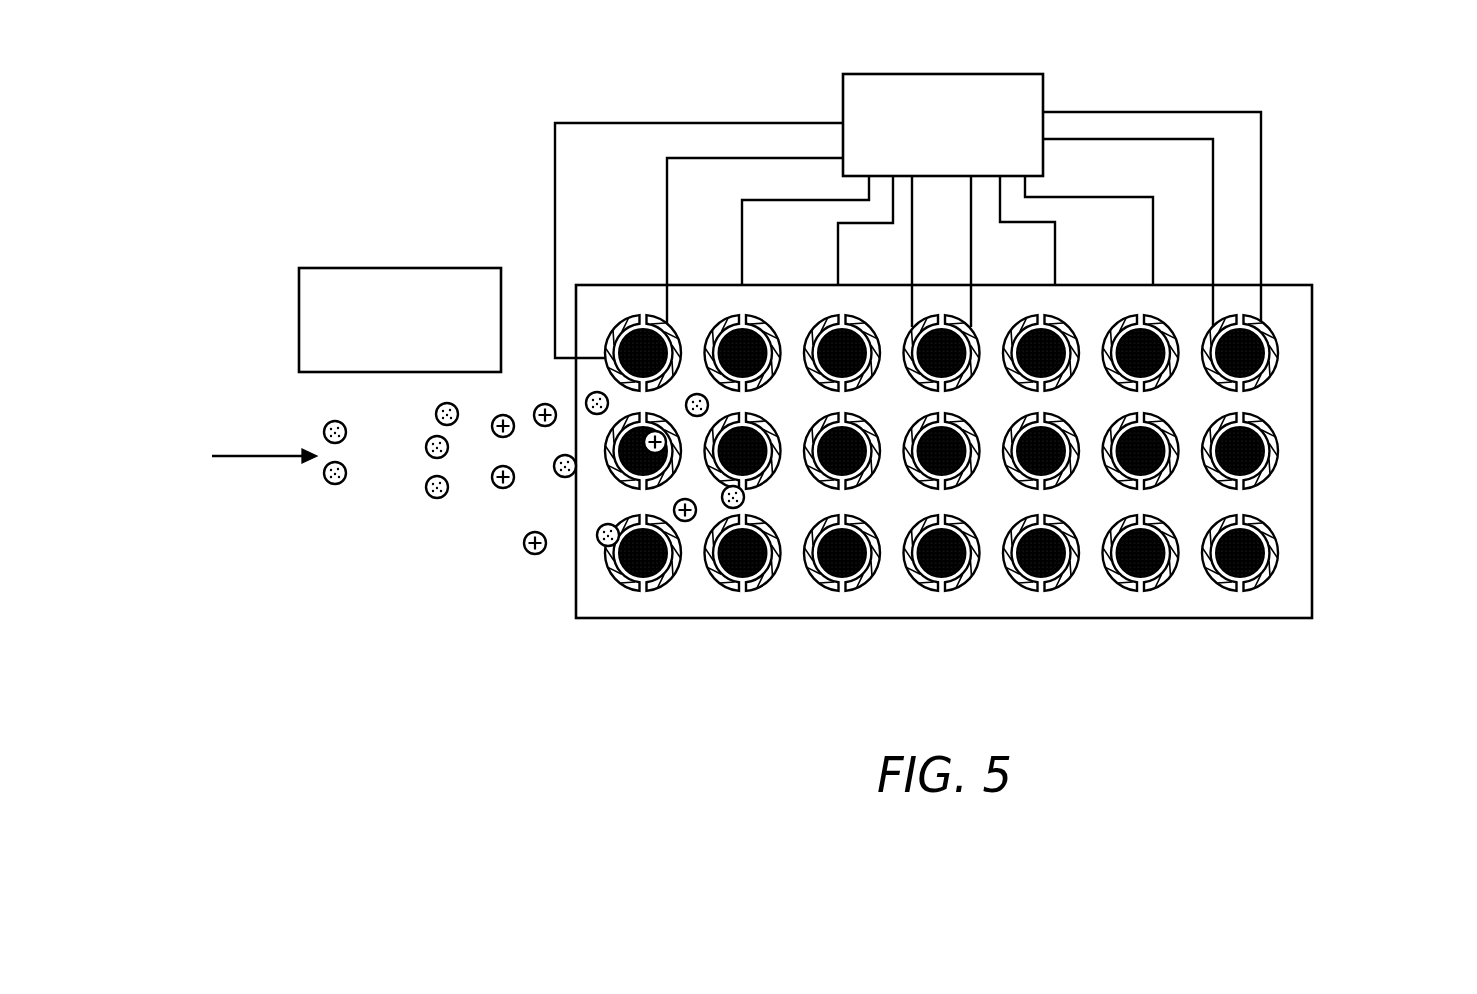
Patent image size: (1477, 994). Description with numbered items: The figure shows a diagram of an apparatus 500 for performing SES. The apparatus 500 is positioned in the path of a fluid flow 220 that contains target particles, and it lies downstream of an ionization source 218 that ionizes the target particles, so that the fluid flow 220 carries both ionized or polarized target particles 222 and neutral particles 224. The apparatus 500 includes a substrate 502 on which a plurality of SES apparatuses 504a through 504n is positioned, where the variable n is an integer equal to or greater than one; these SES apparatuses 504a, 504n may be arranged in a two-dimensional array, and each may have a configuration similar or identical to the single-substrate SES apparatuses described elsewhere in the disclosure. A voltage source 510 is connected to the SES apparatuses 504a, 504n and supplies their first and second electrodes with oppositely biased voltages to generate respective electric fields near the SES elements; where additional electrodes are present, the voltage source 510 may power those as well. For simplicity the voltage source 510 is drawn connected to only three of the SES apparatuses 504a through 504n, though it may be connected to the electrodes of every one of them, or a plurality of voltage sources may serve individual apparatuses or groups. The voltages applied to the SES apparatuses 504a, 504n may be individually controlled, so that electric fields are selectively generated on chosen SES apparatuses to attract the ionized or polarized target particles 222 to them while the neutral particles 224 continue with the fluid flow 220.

The apparatus 500 is at (922, 430).
The substrate 502 is at (1178, 618).
The SES apparatus 504a is at (618, 325).
The SES apparatus 504n is at (1322, 278).
The voltage source 510 is at (958, 149).
The ionization source 218 is at (416, 361).
The fluid flow 220 is at (220, 449).
The ionized or polarized target particles 222 is at (524, 539).
The neutral particles 224 is at (429, 494).